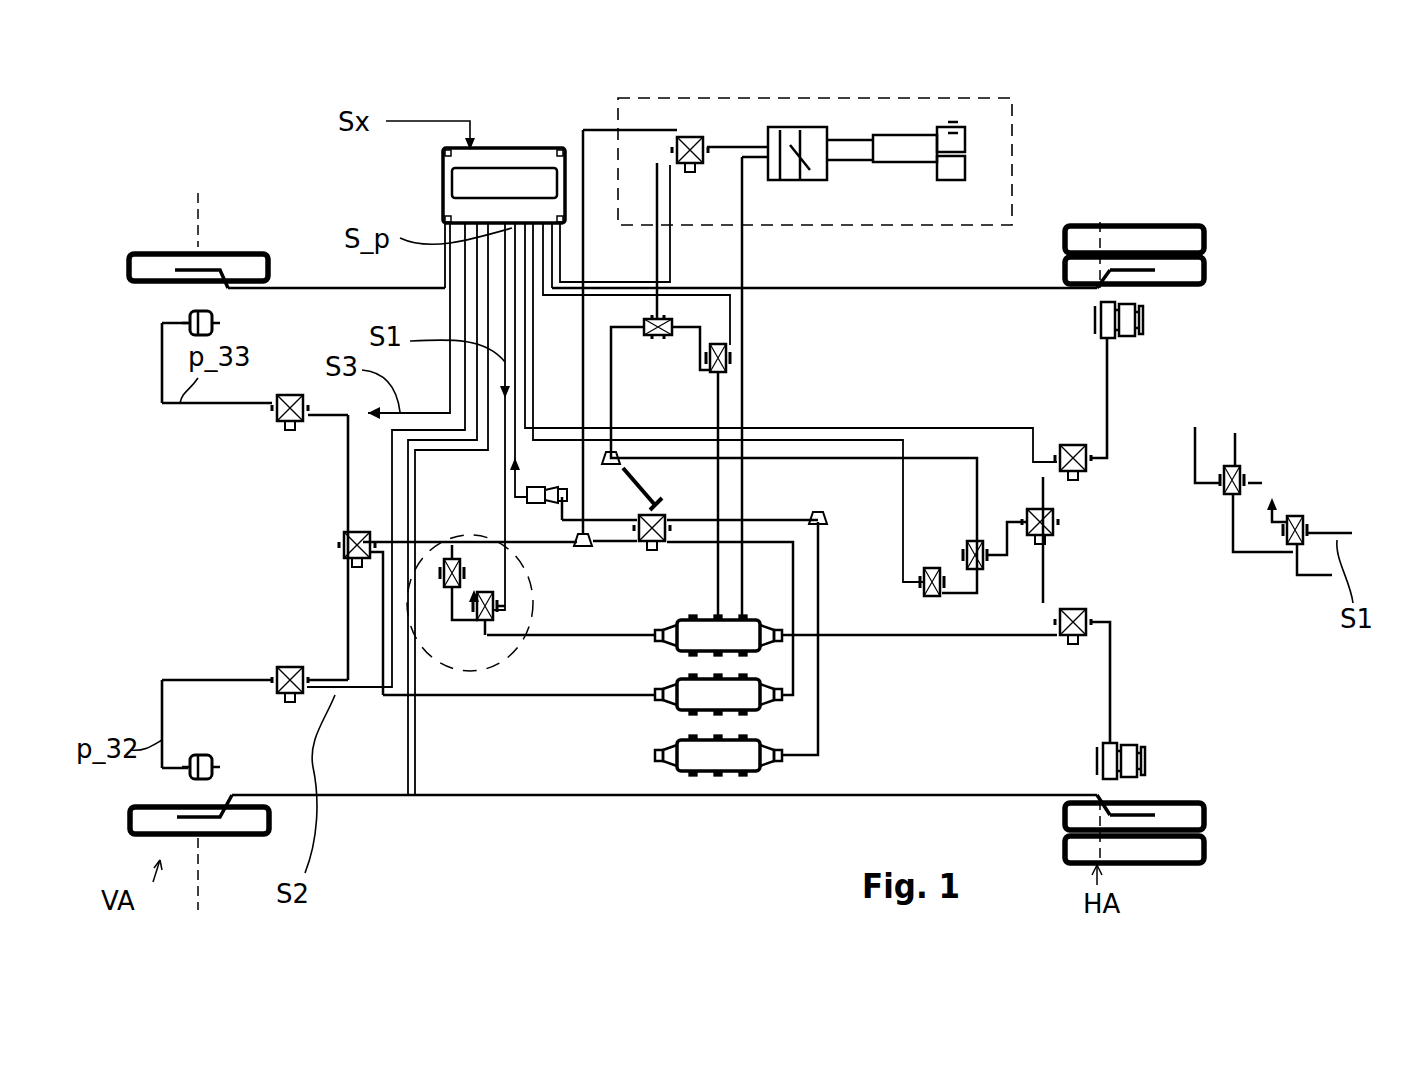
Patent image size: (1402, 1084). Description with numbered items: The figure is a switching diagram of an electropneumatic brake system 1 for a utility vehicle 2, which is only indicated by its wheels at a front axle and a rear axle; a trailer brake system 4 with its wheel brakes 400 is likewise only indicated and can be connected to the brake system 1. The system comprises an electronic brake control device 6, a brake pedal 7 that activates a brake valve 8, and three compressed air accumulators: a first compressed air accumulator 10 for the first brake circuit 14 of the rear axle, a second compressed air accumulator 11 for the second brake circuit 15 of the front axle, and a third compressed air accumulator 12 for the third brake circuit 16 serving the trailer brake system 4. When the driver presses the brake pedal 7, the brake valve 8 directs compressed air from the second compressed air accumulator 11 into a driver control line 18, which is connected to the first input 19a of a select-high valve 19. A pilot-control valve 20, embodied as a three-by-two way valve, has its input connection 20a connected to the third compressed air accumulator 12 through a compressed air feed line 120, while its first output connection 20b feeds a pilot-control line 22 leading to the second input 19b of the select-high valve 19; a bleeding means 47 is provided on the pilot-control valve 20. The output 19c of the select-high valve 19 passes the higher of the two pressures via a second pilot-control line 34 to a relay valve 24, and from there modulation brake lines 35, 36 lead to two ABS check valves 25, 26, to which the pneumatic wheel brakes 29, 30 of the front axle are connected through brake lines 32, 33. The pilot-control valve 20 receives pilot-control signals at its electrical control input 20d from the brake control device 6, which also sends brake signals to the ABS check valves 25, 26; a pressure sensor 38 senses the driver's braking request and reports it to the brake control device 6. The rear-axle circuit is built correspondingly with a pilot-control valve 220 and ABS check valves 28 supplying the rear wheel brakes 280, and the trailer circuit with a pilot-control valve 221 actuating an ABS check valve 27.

The electropneumatic brake system 1 is at (1158, 158).
The utility vehicle 2 is at (315, 293).
The trailer brake system 4 is at (1008, 112).
The wheel brakes in trailer brake system 400 is at (967, 168).
The electronic brake control device (ECU) 6 is at (442, 190).
The brake pedal 7 is at (658, 487).
The brake valve 8 is at (640, 552).
The first compressed air accumulator 10 is at (694, 762).
The second compressed air accumulator 11 is at (670, 745).
The third compressed air accumulator 12 is at (748, 642).
The first brake circuit 14 is at (997, 744).
The second brake circuit 15 is at (348, 778).
The third brake circuit 16 is at (585, 122).
The driver control line 18 is at (475, 538).
The select-high valve 19 is at (447, 560).
The first input of the select-high valve 19a is at (1245, 458).
The second input of the select-high valve 19b is at (458, 618).
The output of the select-high valve 19c is at (448, 610).
The pilot-control valve 20 is at (493, 622).
The input connection 20a is at (495, 618).
The first output connection 20b is at (485, 615).
The electrical control input 20d is at (500, 612).
The pilot-control line 22 is at (450, 620).
The relay valve 24 is at (345, 550).
The ABS check valve 25 is at (270, 670).
The ABS check valve 26 is at (272, 422).
The ABS check valve 27 is at (688, 135).
The ABS check valve 28 is at (1062, 438).
The pneumatic wheel brake (brake cylinder) 29 is at (218, 762).
The pneumatic wheel brake (brake cylinder) 30 is at (186, 318).
The brake line 32 is at (160, 680).
The brake line 33 is at (160, 365).
The second pilot-control line 34 is at (383, 560).
The modulation brake line 35 is at (346, 458).
The modulation brake line 36 is at (440, 590).
The pressure sensor 38 is at (537, 480).
The bleeding means 47 is at (510, 548).
The compressed air feed line 120 is at (632, 675).
The pilot-control valve 220 is at (728, 346).
The pilot-control valve 221 is at (946, 598).
The wheel brakes at rear axle 280 is at (1140, 322).